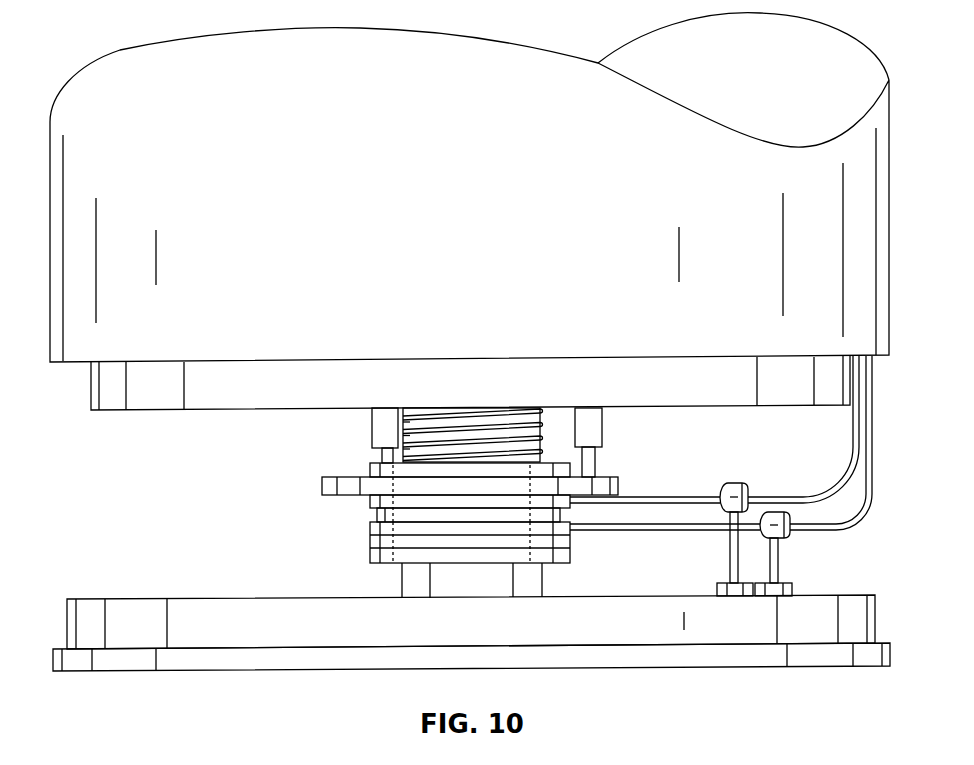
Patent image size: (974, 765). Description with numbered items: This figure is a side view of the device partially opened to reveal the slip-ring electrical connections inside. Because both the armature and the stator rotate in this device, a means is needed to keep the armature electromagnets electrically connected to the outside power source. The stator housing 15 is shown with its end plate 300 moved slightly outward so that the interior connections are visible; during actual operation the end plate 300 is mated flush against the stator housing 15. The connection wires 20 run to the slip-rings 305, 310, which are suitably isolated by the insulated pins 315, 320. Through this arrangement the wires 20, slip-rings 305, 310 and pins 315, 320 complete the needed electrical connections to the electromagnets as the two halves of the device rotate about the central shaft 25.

The stator housing 15 is at (889, 253).
The connection wires 20 is at (860, 437).
The central shaft 25 is at (462, 592).
The end plate 300 is at (843, 655).
The slip-ring 305 is at (370, 498).
The slip-ring 310 is at (372, 528).
The insulated pin 315 is at (372, 428).
The insulated pin 320 is at (602, 428).